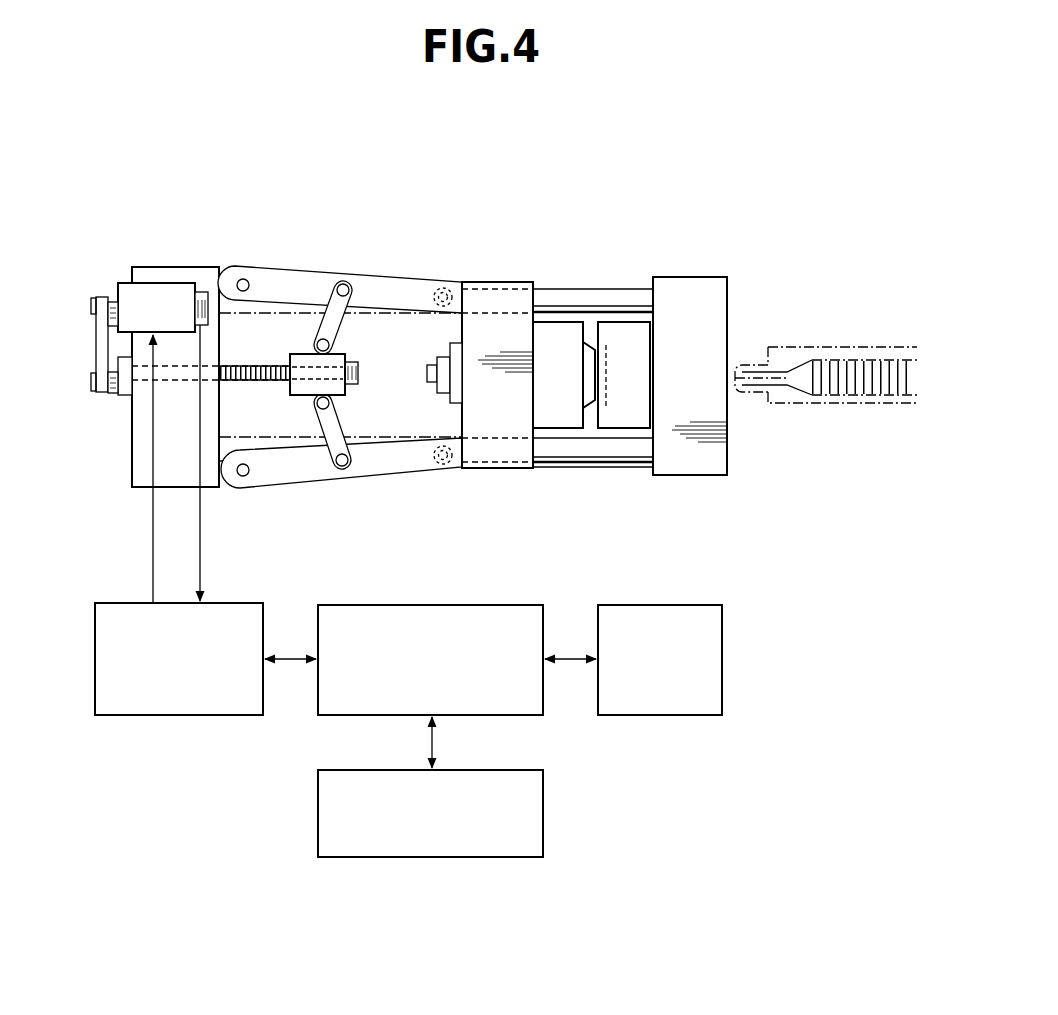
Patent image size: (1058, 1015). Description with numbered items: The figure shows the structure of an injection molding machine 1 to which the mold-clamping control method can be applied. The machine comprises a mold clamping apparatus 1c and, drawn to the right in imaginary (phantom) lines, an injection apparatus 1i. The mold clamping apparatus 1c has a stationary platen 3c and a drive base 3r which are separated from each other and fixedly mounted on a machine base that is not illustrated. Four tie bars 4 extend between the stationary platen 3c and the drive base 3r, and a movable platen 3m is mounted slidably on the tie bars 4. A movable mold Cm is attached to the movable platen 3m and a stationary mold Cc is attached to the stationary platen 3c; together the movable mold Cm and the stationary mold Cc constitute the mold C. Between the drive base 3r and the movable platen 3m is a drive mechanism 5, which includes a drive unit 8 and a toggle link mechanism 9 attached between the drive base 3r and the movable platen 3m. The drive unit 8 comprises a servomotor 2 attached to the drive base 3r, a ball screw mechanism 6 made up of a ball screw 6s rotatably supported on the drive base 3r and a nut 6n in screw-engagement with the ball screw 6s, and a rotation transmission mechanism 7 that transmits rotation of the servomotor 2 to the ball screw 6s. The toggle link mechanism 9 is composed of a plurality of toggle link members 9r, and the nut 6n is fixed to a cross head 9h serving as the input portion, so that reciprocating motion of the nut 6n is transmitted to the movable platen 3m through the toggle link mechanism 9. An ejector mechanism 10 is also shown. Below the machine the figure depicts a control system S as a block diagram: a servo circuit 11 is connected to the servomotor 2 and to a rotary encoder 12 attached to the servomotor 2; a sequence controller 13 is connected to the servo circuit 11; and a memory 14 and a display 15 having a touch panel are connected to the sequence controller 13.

The injection molding machine 1 is at (819, 252).
The mold clamping apparatus 1c is at (579, 252).
The injection apparatus 1i is at (855, 336).
The servomotor 2 is at (146, 271).
The drive base 3r is at (208, 267).
The movable platen 3m is at (480, 282).
The stationary platen 3c is at (695, 277).
The tie bars 4 is at (548, 289).
The drive mechanism 5 is at (313, 250).
The ball screw mechanism 6 is at (327, 426).
The ball screw 6s is at (268, 366).
The nut 6n is at (327, 442).
The rotation transmission mechanism 7 is at (91, 399).
The drive unit 8 is at (81, 290).
The toggle link mechanism 9 is at (340, 383).
The toggle link members 9r is at (362, 297).
The cross head 9h is at (346, 393).
The ejector mechanism 10 is at (452, 414).
The servo circuit 11 is at (122, 603).
The rotary encoder 12 is at (204, 291).
The sequence controller 13 is at (462, 605).
The memory 14 is at (661, 605).
The display 15 is at (543, 806).
The mold C is at (590, 385).
The movable mold Cm is at (553, 430).
The stationary mold Cc is at (625, 430).
The control system S is at (647, 768).